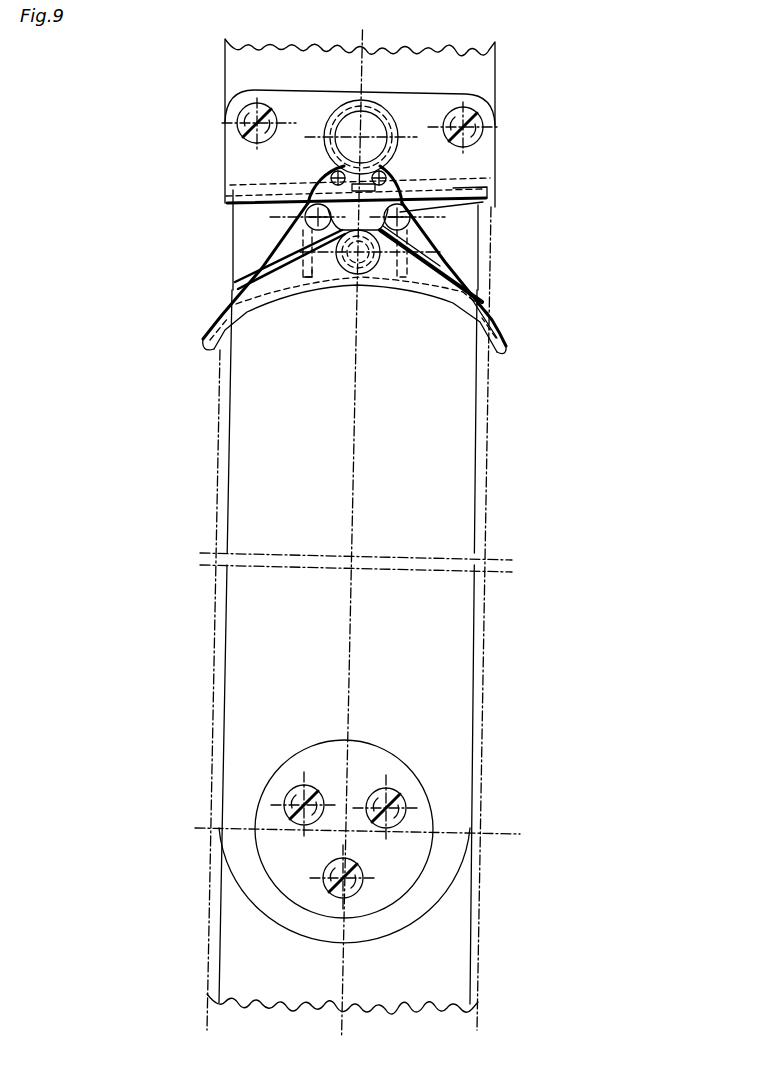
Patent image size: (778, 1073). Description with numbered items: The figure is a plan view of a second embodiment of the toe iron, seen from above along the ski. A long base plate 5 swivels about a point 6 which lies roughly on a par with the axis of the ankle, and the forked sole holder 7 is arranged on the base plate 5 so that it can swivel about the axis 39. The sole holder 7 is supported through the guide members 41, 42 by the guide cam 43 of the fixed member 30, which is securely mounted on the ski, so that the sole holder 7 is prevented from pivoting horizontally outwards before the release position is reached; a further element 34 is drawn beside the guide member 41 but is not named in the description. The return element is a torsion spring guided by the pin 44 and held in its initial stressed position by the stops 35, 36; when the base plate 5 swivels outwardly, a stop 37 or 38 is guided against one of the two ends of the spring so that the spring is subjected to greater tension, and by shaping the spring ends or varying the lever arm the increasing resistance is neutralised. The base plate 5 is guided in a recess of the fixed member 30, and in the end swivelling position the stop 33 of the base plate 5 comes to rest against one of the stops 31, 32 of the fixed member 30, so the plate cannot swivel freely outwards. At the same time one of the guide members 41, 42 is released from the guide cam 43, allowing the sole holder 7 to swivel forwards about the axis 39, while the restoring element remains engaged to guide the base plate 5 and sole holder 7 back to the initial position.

The base plate 5 is at (438, 678).
The swivel point 6 is at (410, 853).
The sole holder 7 is at (465, 298).
The fixed member 30 is at (293, 102).
The stop of the fixed member 31 is at (232, 190).
The stop of the fixed member 32 is at (484, 198).
The stop of the base plate 33 is at (402, 183).
The guide pin 34 is at (300, 237).
The stop 35 is at (386, 177).
The stop 36 is at (332, 173).
The stop 37 is at (305, 221).
The stop 38 is at (410, 220).
The axis 39 is at (236, 284).
The guide member 41 is at (293, 244).
The guide member 42 is at (425, 255).
The guide cam 43 is at (486, 202).
The pin 44 is at (367, 128).